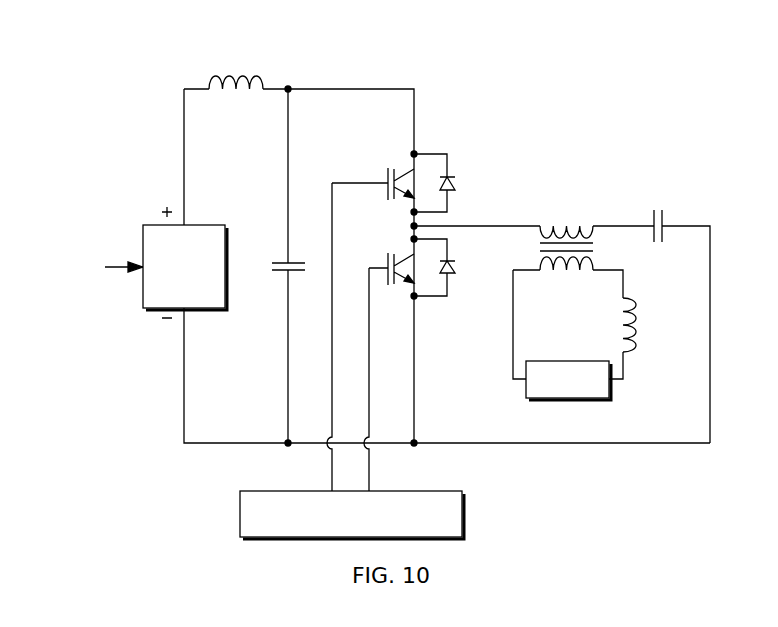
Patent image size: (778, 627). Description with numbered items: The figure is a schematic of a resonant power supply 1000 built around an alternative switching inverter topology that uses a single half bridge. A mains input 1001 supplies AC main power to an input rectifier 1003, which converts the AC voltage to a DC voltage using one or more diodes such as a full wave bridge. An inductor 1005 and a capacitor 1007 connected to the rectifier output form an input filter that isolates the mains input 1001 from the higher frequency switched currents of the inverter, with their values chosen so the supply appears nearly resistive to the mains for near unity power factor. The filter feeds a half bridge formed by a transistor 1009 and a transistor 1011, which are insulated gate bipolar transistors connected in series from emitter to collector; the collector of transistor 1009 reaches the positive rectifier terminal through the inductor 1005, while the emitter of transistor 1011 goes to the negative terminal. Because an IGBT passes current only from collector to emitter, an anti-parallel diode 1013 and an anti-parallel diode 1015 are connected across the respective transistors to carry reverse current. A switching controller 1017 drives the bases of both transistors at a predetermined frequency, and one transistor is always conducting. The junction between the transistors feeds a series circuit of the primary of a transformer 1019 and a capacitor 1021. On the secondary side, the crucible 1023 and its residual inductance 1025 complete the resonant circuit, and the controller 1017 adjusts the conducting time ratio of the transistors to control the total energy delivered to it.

The supply 1000 is at (122, 75).
The mains input 1001 is at (75, 230).
The input rectifier 1003 is at (208, 226).
The inductor 1005 is at (228, 80).
The capacitor 1007 is at (270, 270).
The transistor 1009 is at (402, 168).
The transistor 1011 is at (402, 252).
The anti-parallel diode 1013 is at (455, 182).
The anti-parallel diode 1015 is at (455, 268).
The switching controller 1017 is at (438, 490).
The transformer 1019 is at (563, 224).
The capacitor 1021 is at (655, 210).
The crucible 1023 is at (562, 360).
The residual inductance 1025 is at (637, 340).